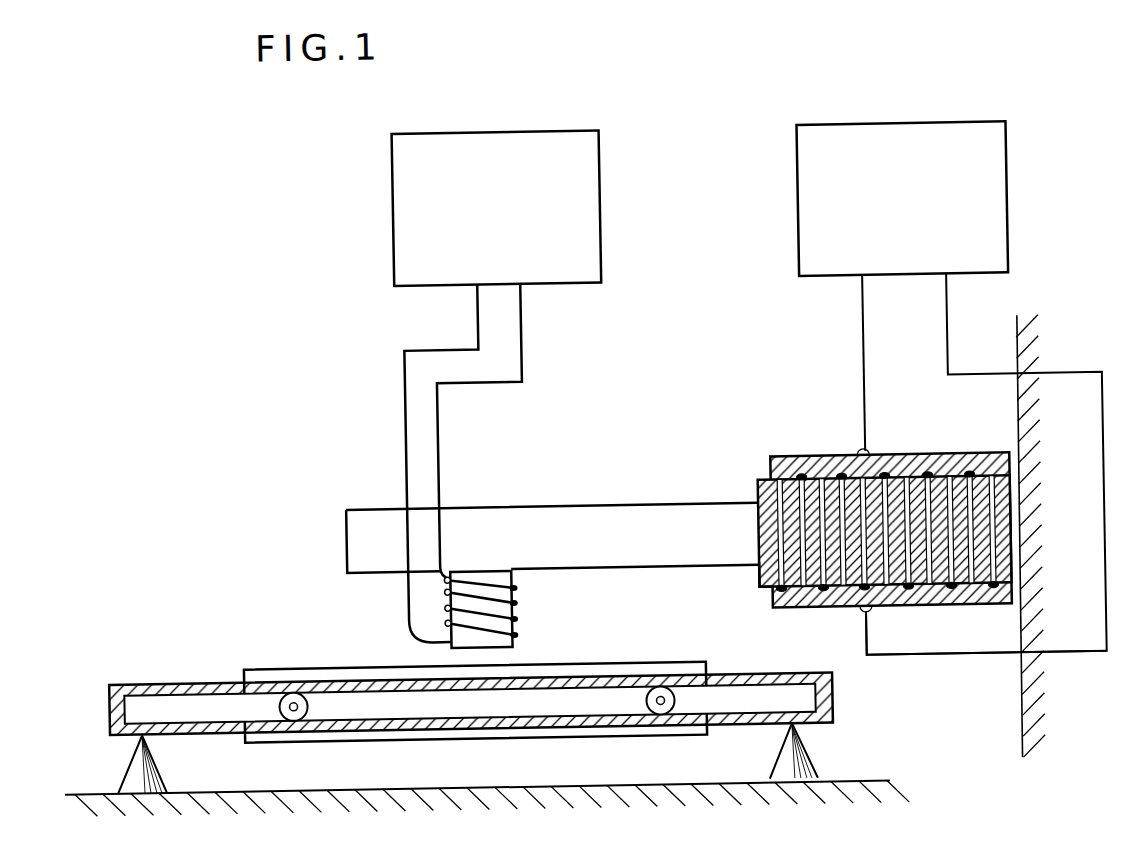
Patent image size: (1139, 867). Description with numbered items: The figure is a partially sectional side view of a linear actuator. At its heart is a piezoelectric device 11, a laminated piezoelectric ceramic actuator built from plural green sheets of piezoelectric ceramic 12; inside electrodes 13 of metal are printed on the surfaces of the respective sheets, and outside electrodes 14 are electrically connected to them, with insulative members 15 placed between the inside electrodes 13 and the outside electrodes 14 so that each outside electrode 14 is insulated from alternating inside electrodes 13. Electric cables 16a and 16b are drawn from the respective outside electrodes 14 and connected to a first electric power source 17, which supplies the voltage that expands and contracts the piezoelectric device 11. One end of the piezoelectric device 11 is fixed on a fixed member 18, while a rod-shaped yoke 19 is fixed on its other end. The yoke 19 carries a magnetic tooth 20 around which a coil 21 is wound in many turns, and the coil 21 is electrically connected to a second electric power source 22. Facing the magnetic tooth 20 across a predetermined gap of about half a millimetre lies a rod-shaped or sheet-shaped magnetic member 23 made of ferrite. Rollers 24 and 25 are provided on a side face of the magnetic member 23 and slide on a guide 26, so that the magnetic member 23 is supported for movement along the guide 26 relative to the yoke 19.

The piezoelectric device 11 is at (758, 488).
The piezoelectric ceramic 12 is at (820, 483).
The inside electrodes 13 is at (760, 586).
The outside electrodes 14 is at (906, 460).
The insulative members 15 is at (985, 612).
The electric cable 16a is at (862, 325).
The electric cable 16b is at (952, 320).
The first electric power source 17 is at (950, 129).
The fixed member 18 is at (1036, 490).
The rod-shaped yoke 19 is at (597, 506).
The magnetic tooth 20 is at (470, 647).
The coil 21 is at (518, 617).
The second electric power source 22 is at (536, 131).
The magnetic member 23 is at (325, 664).
The roller 24 is at (290, 688).
The roller 25 is at (657, 688).
The guide 26 is at (829, 703).